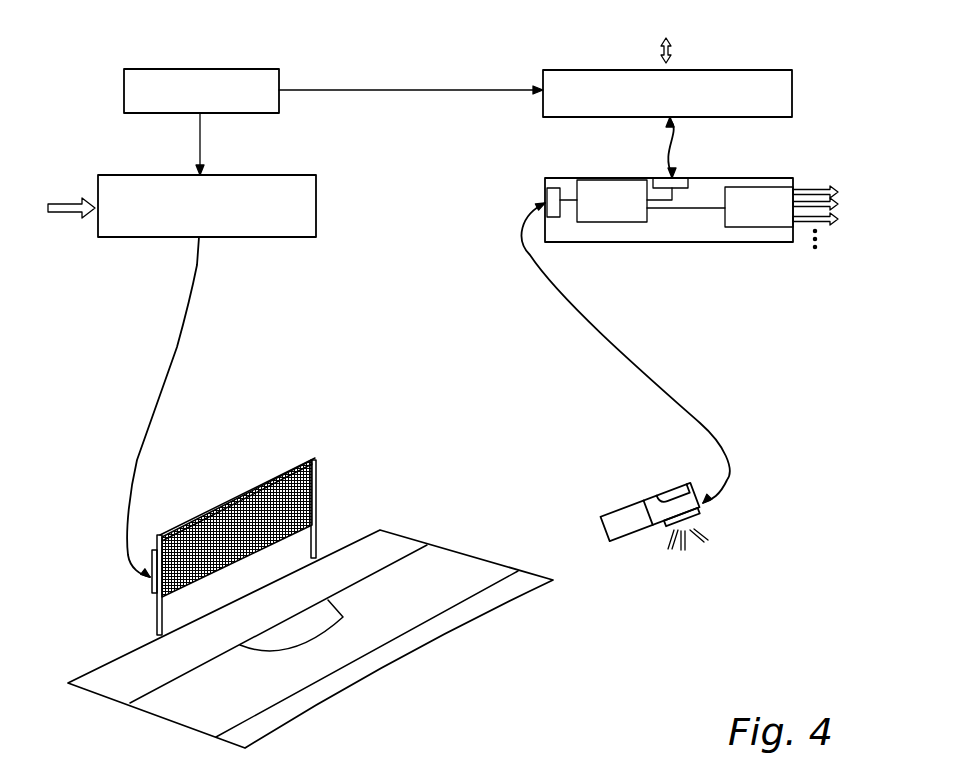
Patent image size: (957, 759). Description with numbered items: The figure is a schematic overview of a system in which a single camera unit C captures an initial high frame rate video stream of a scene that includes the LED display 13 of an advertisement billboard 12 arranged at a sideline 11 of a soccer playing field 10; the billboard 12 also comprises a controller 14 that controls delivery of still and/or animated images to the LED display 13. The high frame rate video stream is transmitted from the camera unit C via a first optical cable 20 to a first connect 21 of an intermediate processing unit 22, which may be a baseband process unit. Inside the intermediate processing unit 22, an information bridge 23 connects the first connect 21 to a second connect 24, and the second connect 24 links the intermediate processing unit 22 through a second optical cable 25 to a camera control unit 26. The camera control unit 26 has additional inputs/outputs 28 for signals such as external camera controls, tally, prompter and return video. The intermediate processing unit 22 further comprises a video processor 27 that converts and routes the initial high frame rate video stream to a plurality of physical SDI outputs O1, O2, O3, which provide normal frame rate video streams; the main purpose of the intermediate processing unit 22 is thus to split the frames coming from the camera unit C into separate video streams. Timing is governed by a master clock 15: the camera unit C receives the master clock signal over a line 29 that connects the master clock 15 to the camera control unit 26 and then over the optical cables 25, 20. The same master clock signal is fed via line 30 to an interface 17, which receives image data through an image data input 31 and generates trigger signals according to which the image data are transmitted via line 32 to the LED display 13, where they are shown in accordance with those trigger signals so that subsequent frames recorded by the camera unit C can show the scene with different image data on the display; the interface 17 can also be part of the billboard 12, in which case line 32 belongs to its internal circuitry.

The soccer playing field 10 is at (298, 639).
The sideline 11 is at (107, 663).
The advertisement billboard 12 is at (284, 539).
The LED display 13 is at (302, 500).
The controller 14 is at (150, 587).
The master clock 15 is at (272, 103).
The interface 17 is at (303, 208).
The first optical cable 20 is at (637, 370).
The first connect 21 is at (552, 200).
The intermediate processing unit 22 is at (644, 224).
The information bridge 23 is at (617, 213).
The second connect 24 is at (682, 183).
The second optical cable 25 is at (660, 153).
The camera control unit 26 is at (768, 87).
The video processor 27 is at (765, 216).
The additional inputs/outputs 28 is at (673, 50).
The line 29 is at (443, 90).
The line 30 is at (202, 143).
The image data input 31 is at (67, 205).
The line 32 is at (175, 350).
The SDI output O1 is at (813, 190).
The SDI output O2 is at (820, 200).
The SDI output O3 is at (823, 222).
The camera unit C is at (632, 515).